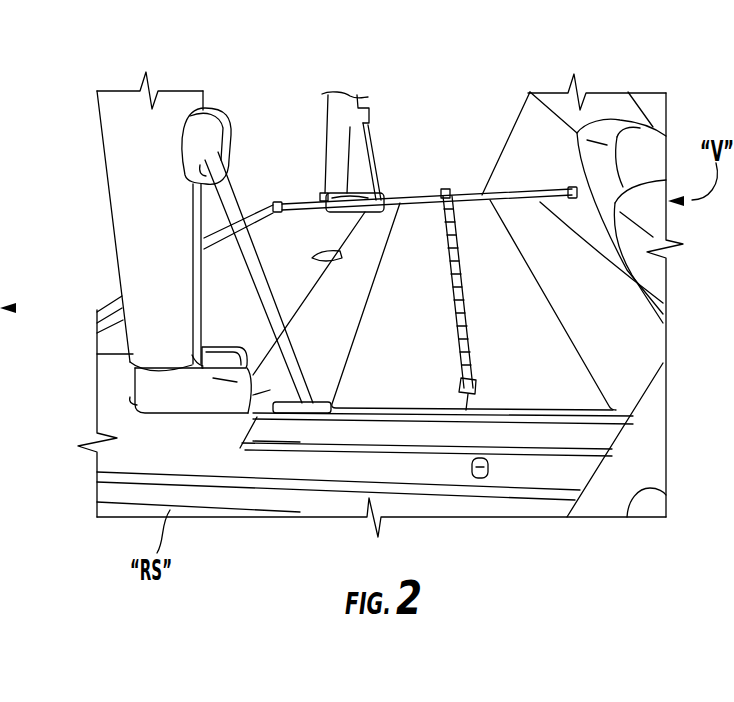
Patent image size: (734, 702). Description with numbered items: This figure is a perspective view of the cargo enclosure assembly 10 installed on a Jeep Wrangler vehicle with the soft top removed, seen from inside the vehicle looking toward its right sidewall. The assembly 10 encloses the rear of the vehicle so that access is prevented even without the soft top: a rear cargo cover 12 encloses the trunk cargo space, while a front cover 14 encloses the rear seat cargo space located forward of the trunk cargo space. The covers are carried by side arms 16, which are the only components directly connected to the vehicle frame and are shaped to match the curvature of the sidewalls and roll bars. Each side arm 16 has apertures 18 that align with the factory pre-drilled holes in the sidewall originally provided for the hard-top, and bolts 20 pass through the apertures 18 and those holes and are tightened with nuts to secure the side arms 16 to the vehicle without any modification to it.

The cargo enclosure assembly 10 is at (540, 347).
The rear cargo cover 12 is at (275, 253).
The front cover 14 is at (428, 277).
The side arm 16 is at (143, 430).
The aperture 18 is at (497, 473).
The bolt 20 is at (322, 193).